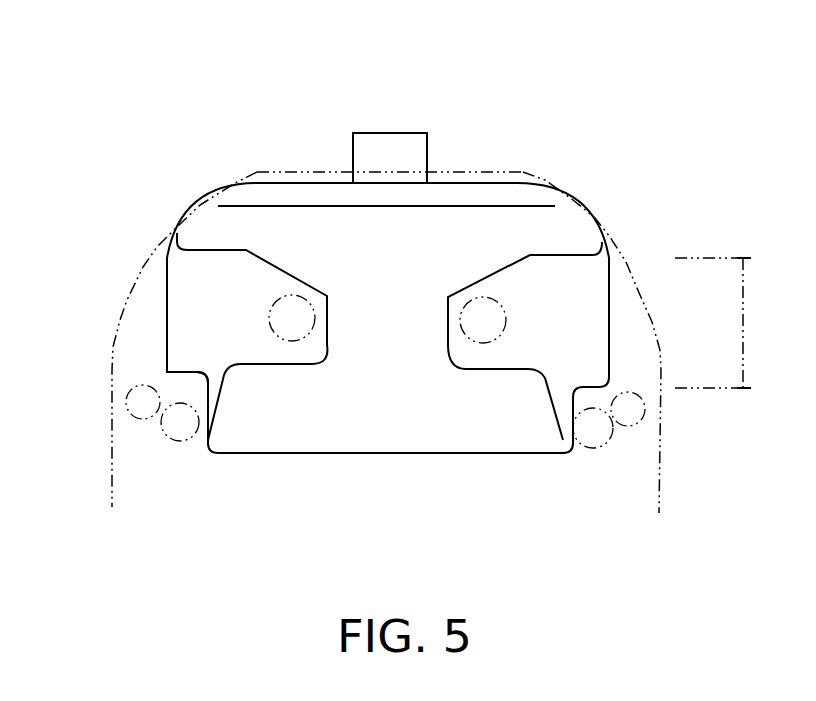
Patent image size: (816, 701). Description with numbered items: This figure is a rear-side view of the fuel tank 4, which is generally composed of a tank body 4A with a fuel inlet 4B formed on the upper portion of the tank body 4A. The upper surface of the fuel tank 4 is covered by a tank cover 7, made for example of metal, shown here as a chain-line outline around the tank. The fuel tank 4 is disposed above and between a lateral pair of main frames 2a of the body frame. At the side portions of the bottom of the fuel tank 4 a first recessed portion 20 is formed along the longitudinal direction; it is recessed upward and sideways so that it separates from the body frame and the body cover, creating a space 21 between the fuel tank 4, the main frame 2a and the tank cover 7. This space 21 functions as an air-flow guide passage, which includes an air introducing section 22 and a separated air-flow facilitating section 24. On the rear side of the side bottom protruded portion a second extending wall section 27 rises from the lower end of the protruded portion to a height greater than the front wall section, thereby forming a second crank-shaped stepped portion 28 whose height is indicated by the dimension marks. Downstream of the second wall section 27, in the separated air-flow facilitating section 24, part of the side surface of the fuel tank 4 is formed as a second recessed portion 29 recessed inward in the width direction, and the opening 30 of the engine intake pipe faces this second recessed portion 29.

The fuel tank 4 is at (551, 132).
The tank body 4A is at (552, 202).
The fuel inlet 4B is at (387, 133).
The tank cover 7 is at (135, 270).
The main frame 2a is at (125, 402).
The first recessed portion 20 is at (570, 417).
The space (air-flow guide passage) 21 is at (176, 422).
The air introducing section 22 is at (187, 391).
The separated air-flow facilitating section 24 is at (208, 326).
The second extending wall section 27 is at (567, 322).
The second crank-shaped stepped portion 28 is at (742, 325).
The second recessed portion 29 is at (318, 352).
The opening of the engine intake pipe 30 is at (286, 318).